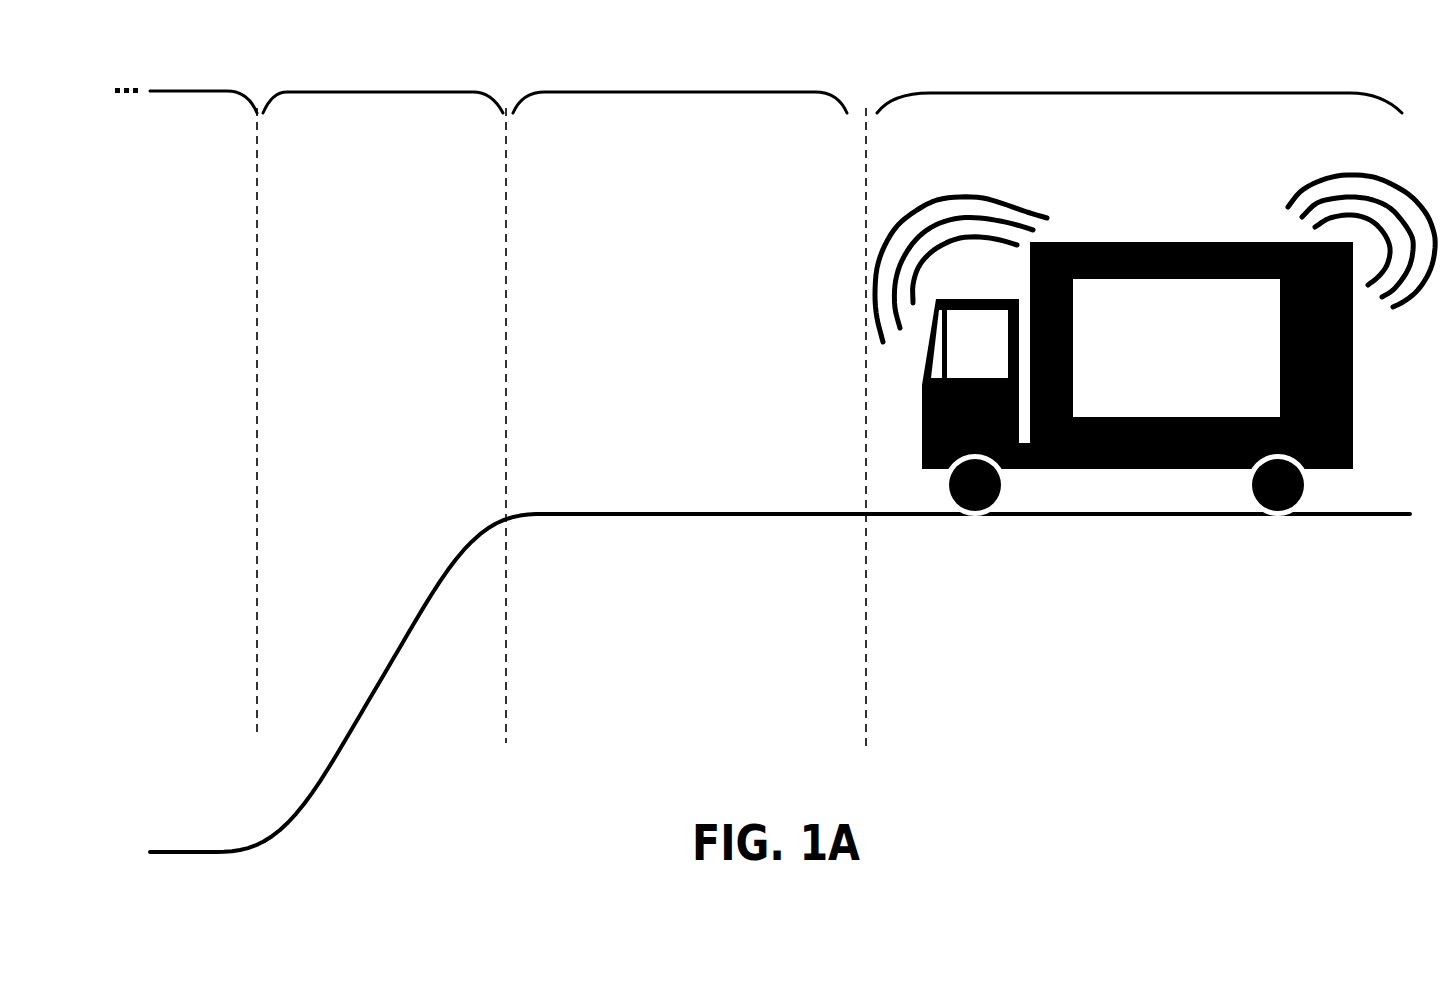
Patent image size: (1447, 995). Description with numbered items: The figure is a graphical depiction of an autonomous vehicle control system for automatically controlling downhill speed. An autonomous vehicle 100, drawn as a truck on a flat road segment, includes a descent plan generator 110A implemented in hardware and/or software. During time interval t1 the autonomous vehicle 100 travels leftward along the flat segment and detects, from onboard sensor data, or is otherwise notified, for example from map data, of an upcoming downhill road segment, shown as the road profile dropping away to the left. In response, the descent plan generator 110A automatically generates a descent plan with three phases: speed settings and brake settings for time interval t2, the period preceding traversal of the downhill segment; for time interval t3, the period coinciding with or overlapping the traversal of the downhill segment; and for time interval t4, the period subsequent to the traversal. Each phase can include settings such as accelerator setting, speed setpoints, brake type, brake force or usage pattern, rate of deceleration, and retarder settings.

The autonomous vehicle 100 is at (1155, 344).
The descent plan generator 110A is at (1176, 348).
The time interval t1 is at (1140, 93).
The time interval t2 is at (680, 92).
The time interval t3 is at (382, 92).
The time interval t4 is at (186, 75).